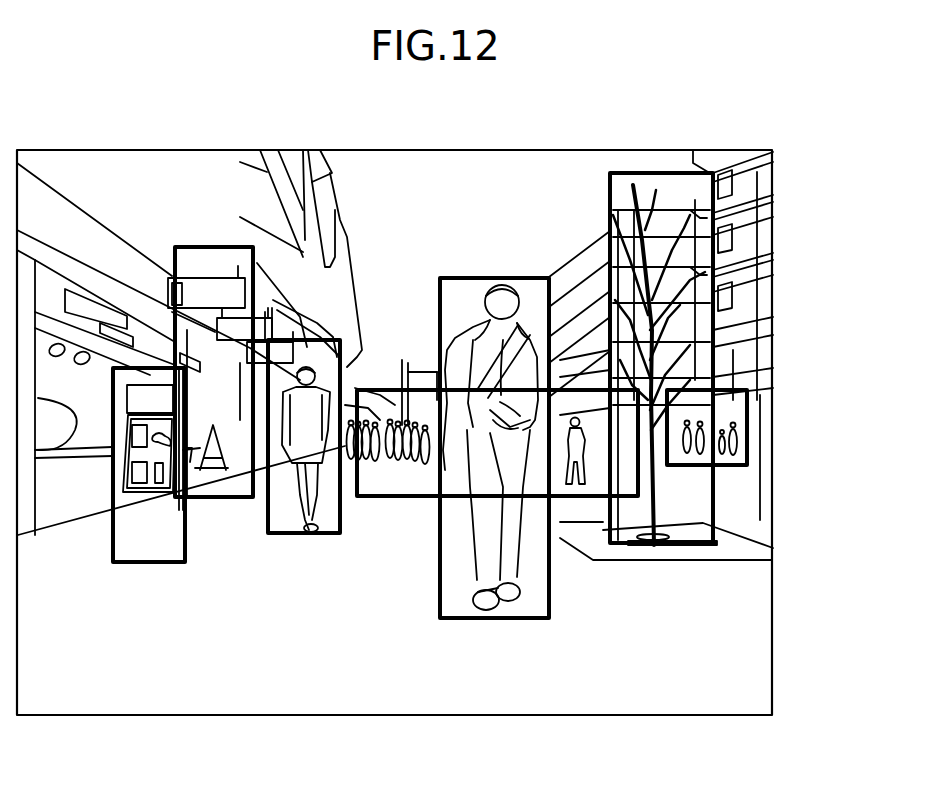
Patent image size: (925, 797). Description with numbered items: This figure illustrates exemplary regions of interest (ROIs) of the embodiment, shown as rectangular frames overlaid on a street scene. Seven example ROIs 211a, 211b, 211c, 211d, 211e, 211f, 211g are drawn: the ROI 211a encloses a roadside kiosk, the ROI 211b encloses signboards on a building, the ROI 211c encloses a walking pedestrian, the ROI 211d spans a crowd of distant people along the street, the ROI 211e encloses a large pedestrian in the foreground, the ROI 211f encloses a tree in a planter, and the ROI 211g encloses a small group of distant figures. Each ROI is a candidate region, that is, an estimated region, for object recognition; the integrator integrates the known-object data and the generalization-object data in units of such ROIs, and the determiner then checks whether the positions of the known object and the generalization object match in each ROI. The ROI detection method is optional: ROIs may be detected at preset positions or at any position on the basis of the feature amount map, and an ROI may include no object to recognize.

The ROI 211a is at (147, 563).
The ROI 211b is at (190, 247).
The ROI 211c is at (302, 534).
The ROI 211d is at (392, 497).
The ROI 211e is at (493, 619).
The ROI 211f is at (656, 173).
The ROI 211g is at (747, 462).